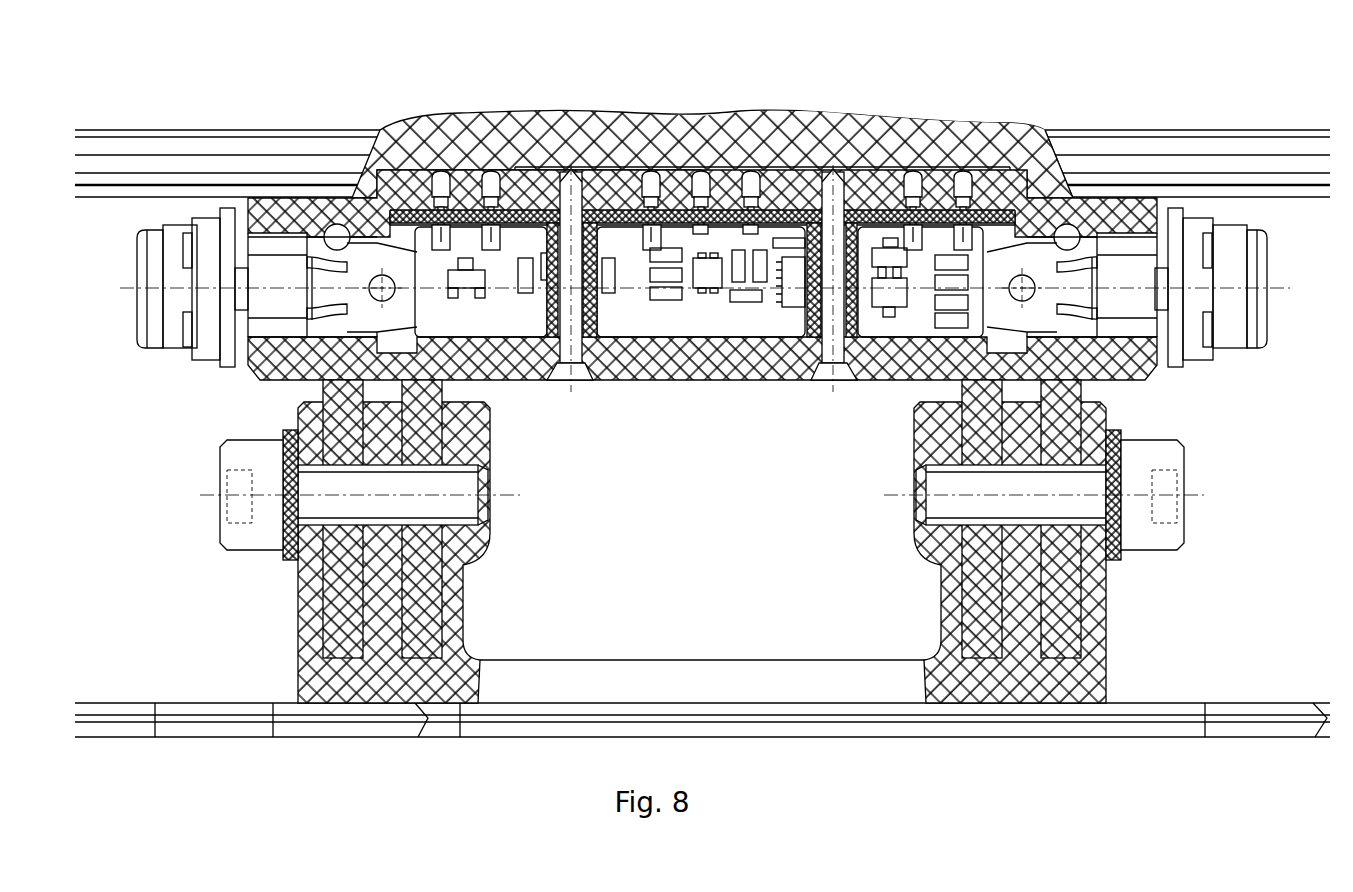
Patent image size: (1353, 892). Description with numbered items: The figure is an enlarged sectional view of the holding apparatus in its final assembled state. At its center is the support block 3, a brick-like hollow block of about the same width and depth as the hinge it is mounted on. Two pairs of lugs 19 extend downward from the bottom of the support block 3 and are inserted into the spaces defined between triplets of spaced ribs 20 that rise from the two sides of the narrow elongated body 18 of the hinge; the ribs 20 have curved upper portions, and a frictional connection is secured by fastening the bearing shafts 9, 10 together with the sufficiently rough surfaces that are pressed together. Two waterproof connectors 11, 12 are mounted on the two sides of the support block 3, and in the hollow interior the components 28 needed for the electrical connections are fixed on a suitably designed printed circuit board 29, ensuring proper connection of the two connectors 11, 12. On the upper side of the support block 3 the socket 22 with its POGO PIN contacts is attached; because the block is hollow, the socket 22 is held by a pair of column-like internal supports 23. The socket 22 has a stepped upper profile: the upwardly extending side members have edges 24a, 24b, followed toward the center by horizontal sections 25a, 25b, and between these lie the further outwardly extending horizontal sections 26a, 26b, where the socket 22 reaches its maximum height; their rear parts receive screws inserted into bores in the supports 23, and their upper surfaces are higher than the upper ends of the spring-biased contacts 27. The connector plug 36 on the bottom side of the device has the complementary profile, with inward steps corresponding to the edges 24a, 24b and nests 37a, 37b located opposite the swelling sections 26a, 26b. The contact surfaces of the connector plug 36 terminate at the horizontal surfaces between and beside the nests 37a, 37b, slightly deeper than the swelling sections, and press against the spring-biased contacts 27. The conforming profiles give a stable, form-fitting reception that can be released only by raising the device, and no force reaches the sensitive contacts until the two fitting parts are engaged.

The support block 3 is at (705, 380).
The bearing shaft 9 is at (250, 535).
The bearing shaft 10 is at (1153, 535).
The waterproof connector 11 is at (152, 333).
The waterproof connector 12 is at (1250, 333).
The body 18 is at (610, 668).
The lug 19 is at (470, 578).
The rib 20 is at (1105, 610).
The socket 22 is at (643, 347).
The internal support 23 is at (533, 337).
The edge 24a is at (362, 157).
The edge 24b is at (1043, 155).
The horizontal section 25a is at (458, 177).
The horizontal section 25b is at (942, 183).
The outwardly extending horizontal section 26a is at (620, 162).
The outwardly extending horizontal section 26b is at (783, 155).
The spring-biased contact 27 is at (440, 183).
The component 28 is at (795, 292).
The printed circuit board 29 is at (918, 320).
The connector plug 36 is at (692, 157).
The nest 37a is at (549, 162).
The nest 37b is at (855, 152).